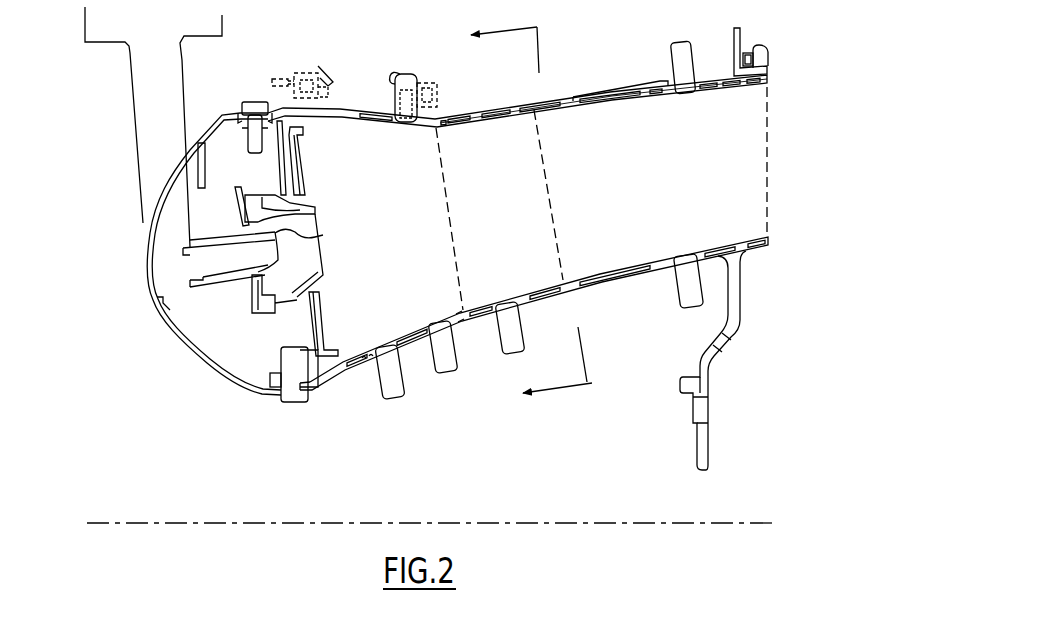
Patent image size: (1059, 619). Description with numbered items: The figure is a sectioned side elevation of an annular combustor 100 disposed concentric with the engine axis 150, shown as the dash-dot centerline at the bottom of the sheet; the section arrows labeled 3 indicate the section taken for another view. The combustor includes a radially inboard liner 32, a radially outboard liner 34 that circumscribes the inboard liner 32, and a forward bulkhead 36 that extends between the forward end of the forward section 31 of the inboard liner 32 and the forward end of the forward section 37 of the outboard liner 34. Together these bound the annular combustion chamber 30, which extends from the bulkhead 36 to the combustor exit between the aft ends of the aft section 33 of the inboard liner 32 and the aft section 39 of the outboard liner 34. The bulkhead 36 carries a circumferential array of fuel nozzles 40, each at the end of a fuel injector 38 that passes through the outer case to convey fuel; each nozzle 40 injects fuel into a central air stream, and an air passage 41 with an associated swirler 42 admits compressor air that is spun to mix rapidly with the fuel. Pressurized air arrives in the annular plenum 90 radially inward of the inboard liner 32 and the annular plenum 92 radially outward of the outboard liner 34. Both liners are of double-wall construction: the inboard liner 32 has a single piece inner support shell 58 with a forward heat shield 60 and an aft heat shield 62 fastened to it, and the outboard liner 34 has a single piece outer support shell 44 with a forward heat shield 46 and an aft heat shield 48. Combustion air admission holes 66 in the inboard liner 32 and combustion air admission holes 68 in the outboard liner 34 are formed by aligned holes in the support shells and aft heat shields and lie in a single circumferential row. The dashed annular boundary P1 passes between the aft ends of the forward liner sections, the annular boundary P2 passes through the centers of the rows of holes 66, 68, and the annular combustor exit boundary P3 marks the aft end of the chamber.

The fuel injector 38 is at (185, 93).
The annular combustor 100 is at (397, 72).
The annular combustion chamber 30 is at (506, 194).
The annular plenum 92 is at (527, 77).
The annular plenum 90 is at (632, 339).
The radially outboard liner 34 is at (630, 78).
The outer support shell 44 is at (605, 92).
The forward heat shield 46 is at (363, 125).
The aft section 39 is at (454, 131).
The combustion air admission holes 68 is at (548, 110).
The aft heat shield 48 is at (594, 106).
The annular boundary P1 is at (453, 220).
The annular boundary P2 is at (560, 197).
The annular combustor exit boundary P3 is at (766, 148).
The forward bulkhead 36 is at (303, 170).
The forward section 37 is at (345, 130).
The swirler 42 is at (313, 216).
The fuel nozzle 40 is at (305, 240).
The air passage 41 is at (305, 264).
The aft heat shield 62 is at (665, 255).
The combustion air admission holes 66 is at (572, 282).
The aft section 33 is at (512, 291).
The forward section 31 is at (449, 310).
The forward heat shield 60 is at (397, 340).
The inner support shell 58 is at (472, 332).
The radially inboard liner 32 is at (425, 353).
The engine axis 150 is at (352, 521).
The section line 3 is at (520, 217).